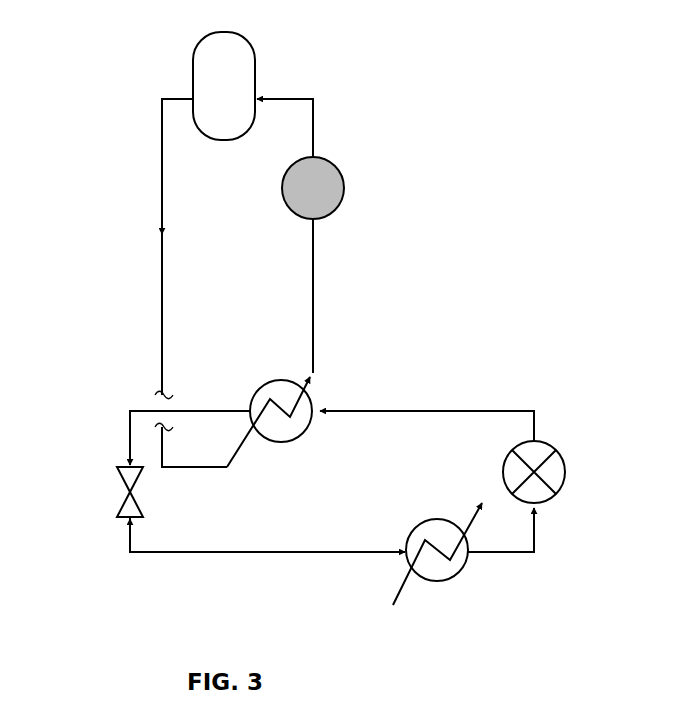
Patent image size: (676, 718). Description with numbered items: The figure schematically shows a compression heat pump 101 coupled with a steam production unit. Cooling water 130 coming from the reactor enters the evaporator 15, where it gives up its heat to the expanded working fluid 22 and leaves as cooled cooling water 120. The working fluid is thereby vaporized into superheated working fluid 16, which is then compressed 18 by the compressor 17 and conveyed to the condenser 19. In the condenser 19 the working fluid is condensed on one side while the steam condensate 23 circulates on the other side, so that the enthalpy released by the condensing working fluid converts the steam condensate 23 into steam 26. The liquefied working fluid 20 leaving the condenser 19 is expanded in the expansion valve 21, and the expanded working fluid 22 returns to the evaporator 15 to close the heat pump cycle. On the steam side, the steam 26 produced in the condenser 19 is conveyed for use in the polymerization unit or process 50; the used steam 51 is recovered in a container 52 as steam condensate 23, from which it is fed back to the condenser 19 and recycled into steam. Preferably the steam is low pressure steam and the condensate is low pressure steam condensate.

The compression heat pump 101 is at (552, 380).
The evaporator 15 is at (433, 567).
The superheated working fluid 16 is at (540, 540).
The compressor 17 is at (553, 472).
The compressed working fluid 18 is at (395, 408).
The condenser 19 is at (263, 373).
The liquefied working fluid 20 is at (127, 430).
The expansion valve 21 is at (123, 472).
The expanded working fluid 22 is at (212, 555).
The steam condensate 23 is at (162, 168).
The steam 26 is at (315, 372).
The polymerization unit/process 50 is at (337, 197).
The used steam 51 is at (313, 127).
The container 52 is at (240, 67).
The cooled cooling water 120 is at (458, 517).
The cooling water 130 is at (403, 568).